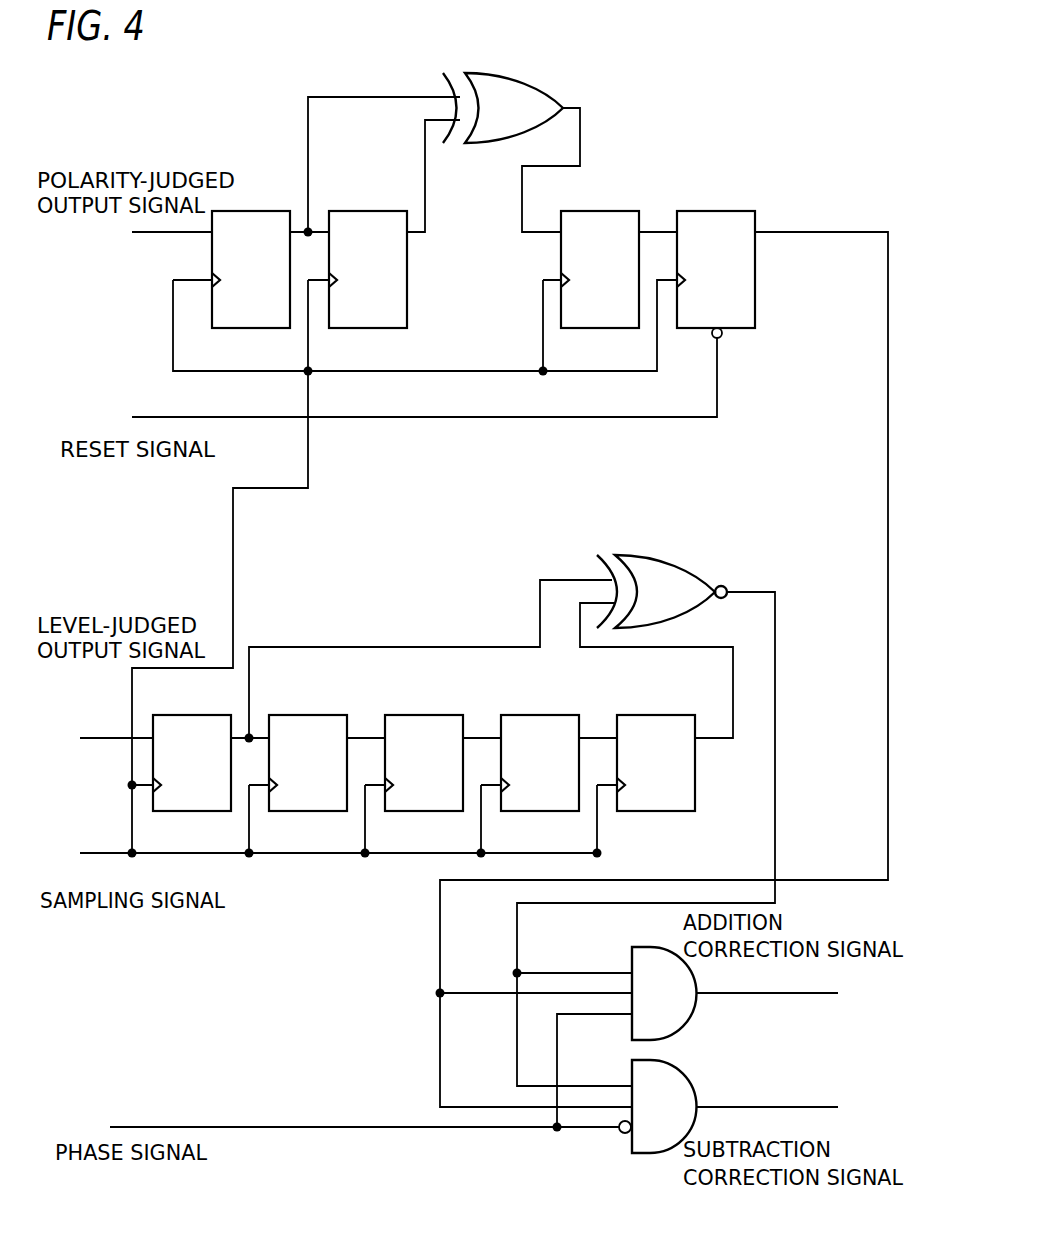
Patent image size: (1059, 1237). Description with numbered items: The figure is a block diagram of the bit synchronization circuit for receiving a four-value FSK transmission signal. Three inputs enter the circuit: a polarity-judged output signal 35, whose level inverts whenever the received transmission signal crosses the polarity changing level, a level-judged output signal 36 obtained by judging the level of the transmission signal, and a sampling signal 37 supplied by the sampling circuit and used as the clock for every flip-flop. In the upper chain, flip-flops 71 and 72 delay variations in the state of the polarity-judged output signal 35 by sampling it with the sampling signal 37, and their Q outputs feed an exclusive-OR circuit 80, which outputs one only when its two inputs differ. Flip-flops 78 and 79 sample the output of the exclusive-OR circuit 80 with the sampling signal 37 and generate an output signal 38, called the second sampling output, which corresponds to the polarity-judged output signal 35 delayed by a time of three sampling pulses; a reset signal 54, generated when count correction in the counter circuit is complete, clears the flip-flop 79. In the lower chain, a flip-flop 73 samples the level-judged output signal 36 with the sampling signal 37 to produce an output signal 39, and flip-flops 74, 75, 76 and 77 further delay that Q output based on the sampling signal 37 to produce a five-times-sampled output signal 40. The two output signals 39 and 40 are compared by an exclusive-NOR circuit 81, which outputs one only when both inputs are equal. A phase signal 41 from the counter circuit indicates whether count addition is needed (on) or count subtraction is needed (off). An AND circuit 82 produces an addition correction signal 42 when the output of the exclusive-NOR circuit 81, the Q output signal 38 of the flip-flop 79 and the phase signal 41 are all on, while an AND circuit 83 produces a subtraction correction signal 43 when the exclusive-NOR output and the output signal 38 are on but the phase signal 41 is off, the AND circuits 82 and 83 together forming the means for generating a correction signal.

The polarity-judged output signal 35 is at (157, 234).
The level-judged output signal 36 is at (103, 738).
The sampling signal 37 is at (338, 870).
The output signal 38 is at (797, 232).
The output signal 39 is at (258, 645).
The output signal 40 is at (587, 580).
The phase signal 41 is at (356, 1076).
The addition correction signal 42 is at (800, 993).
The subtraction correction signal 43 is at (800, 1108).
The reset signal 54 is at (411, 379).
The flip-flop 71 is at (243, 210).
The flip-flop 72 is at (360, 210).
The flip-flop 73 is at (172, 713).
The flip-flop 74 is at (288, 713).
The flip-flop 75 is at (404, 713).
The flip-flop 76 is at (520, 713).
The flip-flop 77 is at (636, 713).
The flip-flop 78 is at (580, 209).
The flip-flop 79 is at (697, 209).
The exclusive-OR circuit 80 is at (472, 72).
The exclusive-NOR circuit 81 is at (630, 549).
The AND circuit 82 is at (632, 957).
The AND circuit 83 is at (665, 1067).